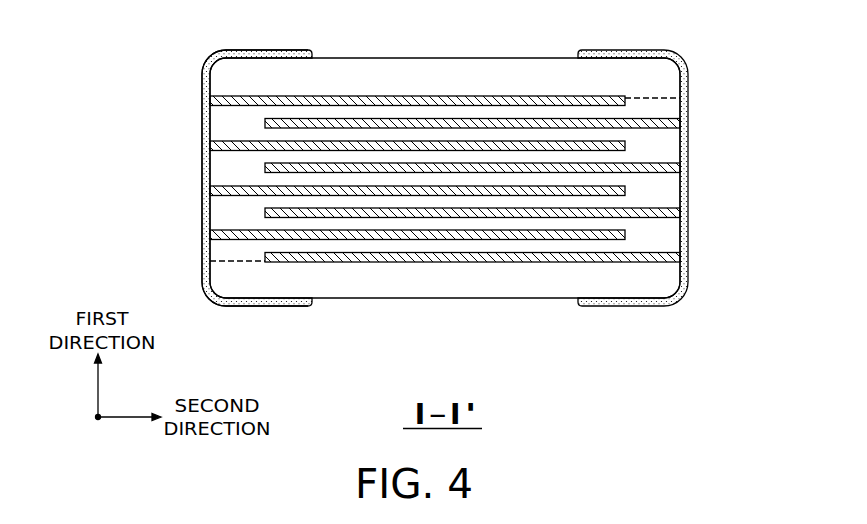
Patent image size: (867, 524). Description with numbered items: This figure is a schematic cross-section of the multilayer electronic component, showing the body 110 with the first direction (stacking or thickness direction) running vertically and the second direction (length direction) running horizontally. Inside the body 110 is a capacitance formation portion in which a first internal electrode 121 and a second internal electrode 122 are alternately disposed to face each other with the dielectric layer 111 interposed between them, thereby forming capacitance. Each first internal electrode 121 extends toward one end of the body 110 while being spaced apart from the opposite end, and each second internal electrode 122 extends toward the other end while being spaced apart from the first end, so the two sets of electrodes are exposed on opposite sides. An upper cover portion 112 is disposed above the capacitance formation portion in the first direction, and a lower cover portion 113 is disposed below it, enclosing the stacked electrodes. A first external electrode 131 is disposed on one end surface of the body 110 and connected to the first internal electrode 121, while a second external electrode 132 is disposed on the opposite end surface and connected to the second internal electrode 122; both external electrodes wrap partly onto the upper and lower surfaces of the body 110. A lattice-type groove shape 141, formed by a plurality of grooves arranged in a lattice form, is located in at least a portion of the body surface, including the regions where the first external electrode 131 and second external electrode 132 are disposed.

The body 110 is at (455, 58).
The dielectric layer 111 is at (339, 134).
The upper cover portion 112 is at (398, 58).
The lower cover portion 113 is at (459, 298).
The first internal electrode 121 is at (510, 96).
The second internal electrode 122 is at (536, 124).
The first external electrode 131 is at (201, 106).
The second external electrode 132 is at (689, 110).
The lattice-type groove shape 141 is at (204, 62).